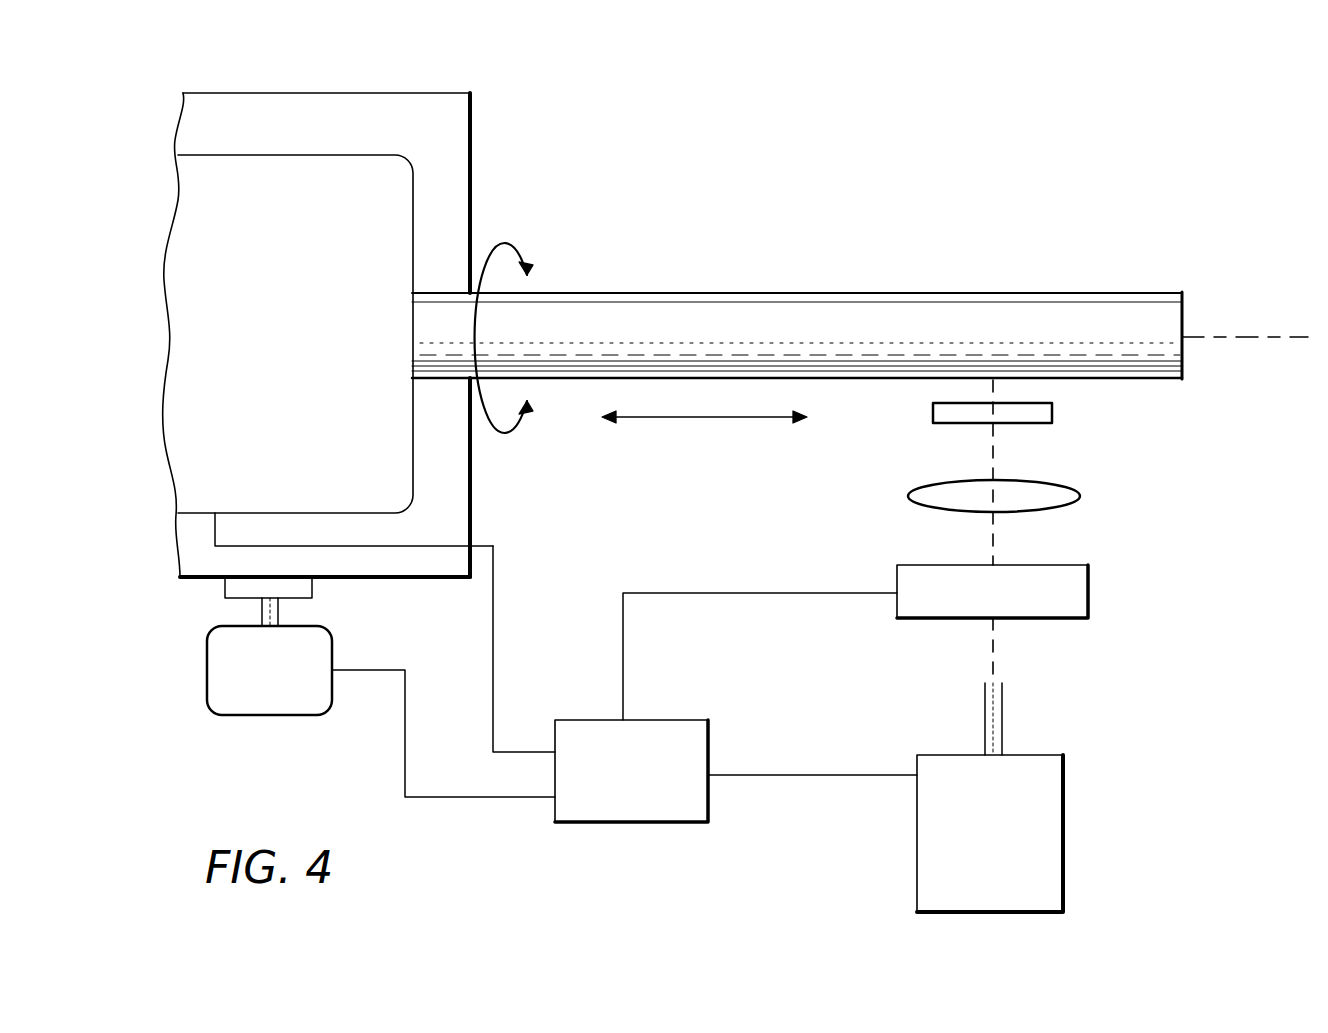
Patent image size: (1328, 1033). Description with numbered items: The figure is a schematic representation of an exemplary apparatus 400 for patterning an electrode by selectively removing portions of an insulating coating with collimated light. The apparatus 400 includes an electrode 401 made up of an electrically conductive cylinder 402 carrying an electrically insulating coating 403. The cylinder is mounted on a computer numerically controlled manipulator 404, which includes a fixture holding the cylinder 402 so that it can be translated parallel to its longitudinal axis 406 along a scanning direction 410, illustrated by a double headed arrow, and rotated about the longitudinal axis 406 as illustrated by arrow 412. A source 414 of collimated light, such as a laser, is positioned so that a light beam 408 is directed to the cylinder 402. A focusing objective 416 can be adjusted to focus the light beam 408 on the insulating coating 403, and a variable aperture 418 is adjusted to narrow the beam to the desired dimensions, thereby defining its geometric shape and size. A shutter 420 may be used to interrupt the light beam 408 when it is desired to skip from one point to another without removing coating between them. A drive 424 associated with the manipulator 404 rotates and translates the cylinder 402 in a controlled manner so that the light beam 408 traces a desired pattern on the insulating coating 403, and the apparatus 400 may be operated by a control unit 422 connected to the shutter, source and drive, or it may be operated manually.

The apparatus 400 is at (773, 205).
The electrode 401 is at (1130, 380).
The electrically conductive cylinder 402 is at (1181, 306).
The electrically insulating coating 403 is at (982, 293).
The computer numerically controlled manipulator 404 is at (306, 93).
The longitudinal axis 406 is at (1240, 337).
The light beam 408 is at (993, 540).
The scanning direction 410 is at (735, 417).
The arrow 412 is at (508, 246).
The source of collimated light 414 is at (1063, 838).
The focusing objective 416 is at (910, 493).
The variable aperture 418 is at (933, 412).
The shutter 420 is at (1088, 593).
The control unit 422 is at (708, 750).
The drive 424 is at (474, 545).